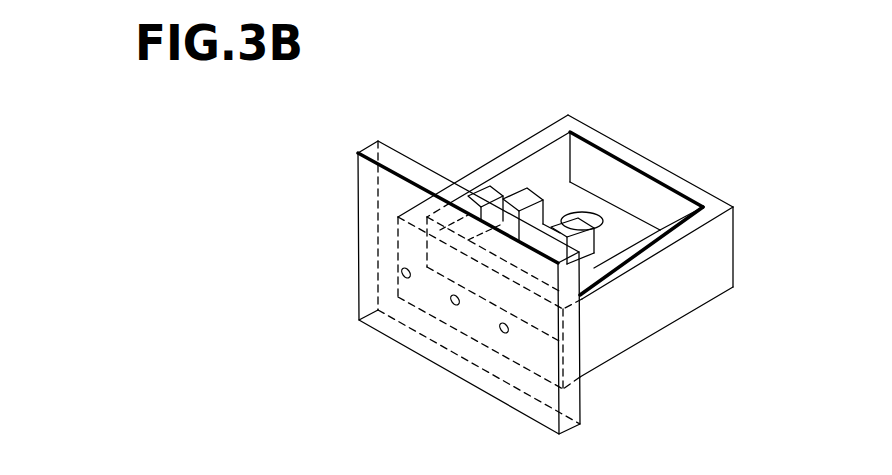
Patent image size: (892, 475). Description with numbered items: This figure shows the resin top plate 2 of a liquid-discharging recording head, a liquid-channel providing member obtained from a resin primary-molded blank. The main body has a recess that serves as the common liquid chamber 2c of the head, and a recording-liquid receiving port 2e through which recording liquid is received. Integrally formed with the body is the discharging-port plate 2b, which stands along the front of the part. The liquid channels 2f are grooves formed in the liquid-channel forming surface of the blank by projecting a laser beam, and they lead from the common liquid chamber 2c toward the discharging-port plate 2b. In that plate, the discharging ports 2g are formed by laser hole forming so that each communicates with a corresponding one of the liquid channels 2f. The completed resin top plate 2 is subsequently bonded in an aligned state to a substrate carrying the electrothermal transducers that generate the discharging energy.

The resin top plate 2 is at (483, 122).
The discharging-port plate 2b is at (376, 187).
The common liquid chamber 2c is at (660, 215).
The recording-liquid receiving port 2e is at (596, 224).
The liquid channels 2f is at (552, 225).
The discharging ports 2g is at (500, 334).